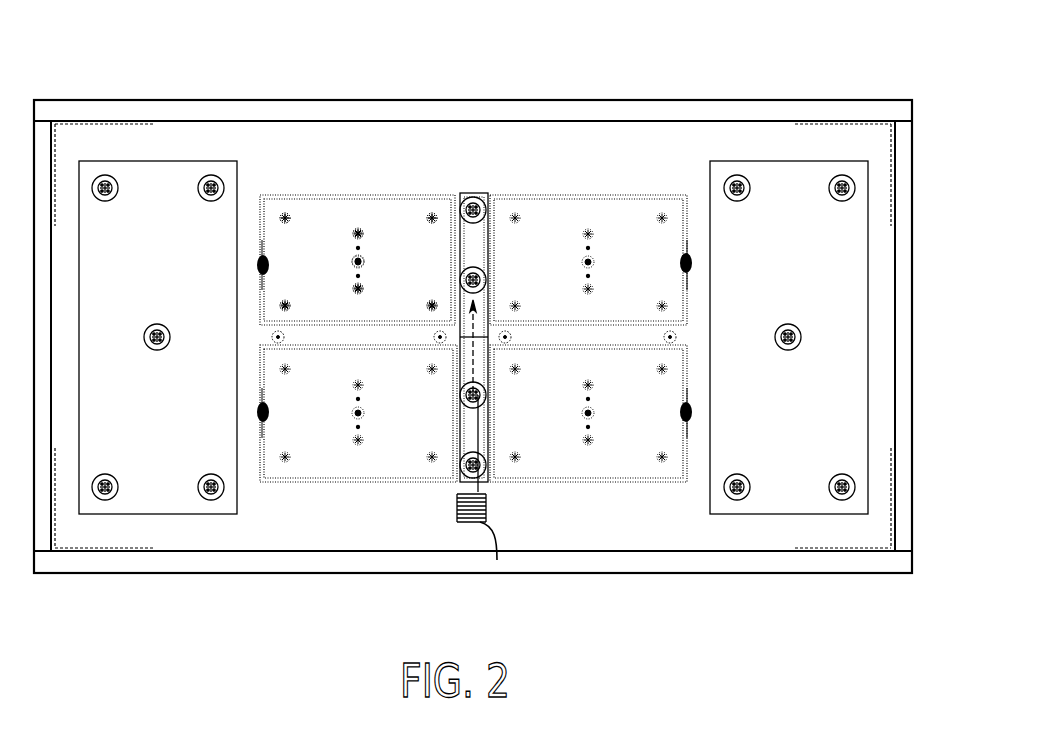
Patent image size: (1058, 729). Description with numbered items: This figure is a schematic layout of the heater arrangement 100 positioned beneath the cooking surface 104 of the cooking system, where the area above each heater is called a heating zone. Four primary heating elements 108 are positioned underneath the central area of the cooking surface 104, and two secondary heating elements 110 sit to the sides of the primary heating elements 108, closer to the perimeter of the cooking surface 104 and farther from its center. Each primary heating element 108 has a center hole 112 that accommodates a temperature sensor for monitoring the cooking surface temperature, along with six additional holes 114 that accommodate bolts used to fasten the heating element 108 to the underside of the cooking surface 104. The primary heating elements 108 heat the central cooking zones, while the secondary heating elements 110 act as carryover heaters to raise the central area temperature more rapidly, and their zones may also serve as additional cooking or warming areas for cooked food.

The sensor device 100 is at (812, 68).
The cooking surface 104 is at (257, 121).
The primary heating elements 108 is at (407, 195).
The secondary heating elements 110 is at (177, 273).
The center hole 112 is at (364, 262).
The additional holes 114 is at (354, 234).